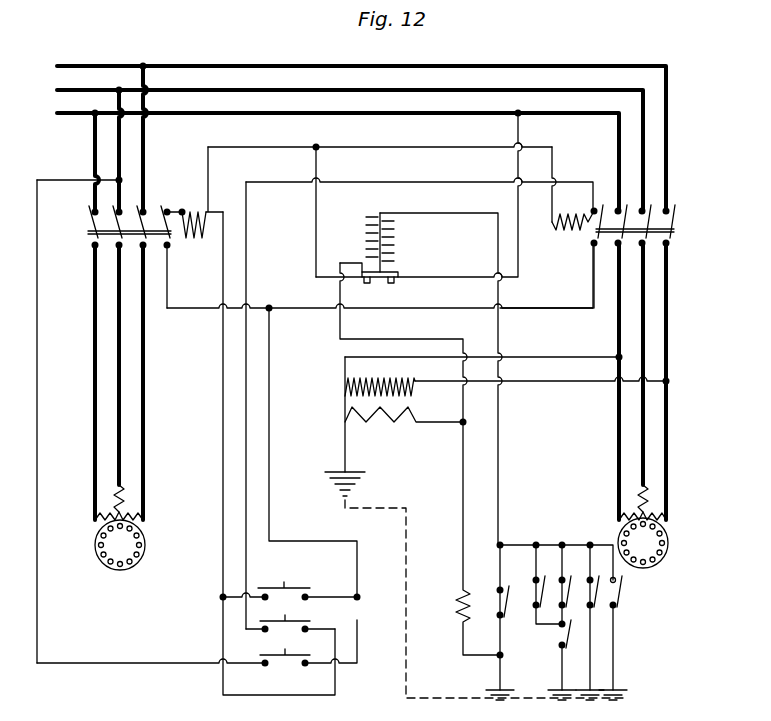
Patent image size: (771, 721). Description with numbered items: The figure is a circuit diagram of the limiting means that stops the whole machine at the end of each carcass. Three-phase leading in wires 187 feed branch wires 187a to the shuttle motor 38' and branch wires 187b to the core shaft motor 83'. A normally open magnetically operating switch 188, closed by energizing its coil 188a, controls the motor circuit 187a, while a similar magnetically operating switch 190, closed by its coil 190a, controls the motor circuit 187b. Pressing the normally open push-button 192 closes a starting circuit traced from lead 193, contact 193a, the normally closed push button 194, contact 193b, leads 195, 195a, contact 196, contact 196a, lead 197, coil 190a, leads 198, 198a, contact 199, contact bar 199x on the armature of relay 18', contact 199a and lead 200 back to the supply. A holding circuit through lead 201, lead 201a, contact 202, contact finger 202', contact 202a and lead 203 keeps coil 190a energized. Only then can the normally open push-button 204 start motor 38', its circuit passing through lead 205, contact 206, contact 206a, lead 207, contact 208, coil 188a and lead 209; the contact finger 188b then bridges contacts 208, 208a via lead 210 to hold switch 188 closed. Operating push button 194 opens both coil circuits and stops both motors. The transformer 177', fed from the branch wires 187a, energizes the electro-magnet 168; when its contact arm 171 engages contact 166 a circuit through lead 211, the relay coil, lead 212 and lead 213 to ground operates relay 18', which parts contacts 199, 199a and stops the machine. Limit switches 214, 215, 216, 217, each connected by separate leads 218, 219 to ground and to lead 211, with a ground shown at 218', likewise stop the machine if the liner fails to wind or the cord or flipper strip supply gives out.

The leading in wires 187 is at (313, 91).
The branch wires 187a is at (646, 348).
The branch wires 187b is at (122, 418).
The magnetically operating switch 188 is at (673, 219).
The coil 188a is at (588, 232).
The contact finger 188b is at (593, 246).
The magnetically operating switch 190 is at (86, 229).
The coil 190a is at (198, 236).
The push-button 192 is at (284, 582).
The lead 193 is at (88, 661).
The contact 193a is at (263, 666).
The contact 193b is at (306, 659).
The push button 194 is at (285, 666).
The lead 195 is at (358, 620).
The lead 195a is at (355, 594).
The contact 196 is at (308, 600).
The contact 196a is at (264, 600).
The lead 197 is at (221, 521).
The lead 198 is at (276, 147).
The lead 198a is at (315, 233).
The contact 199 is at (373, 279).
The contact 199a is at (398, 281).
The contact bar 199x is at (384, 280).
The lead 200 is at (468, 270).
The lead 201 is at (270, 517).
The lead 201a is at (195, 311).
The contact 202 is at (181, 276).
The contact 202a is at (165, 213).
The contact finger 202' is at (105, 416).
The lead 203 is at (182, 213).
The push-button 204 is at (286, 613).
The lead 205 is at (251, 696).
The contact 206 is at (304, 632).
The contact 206a is at (264, 631).
The lead 207 is at (247, 300).
The contact 208 is at (591, 210).
The contact 208a is at (592, 262).
The lead 209 is at (554, 150).
The lead 210 is at (538, 311).
The lead 211 is at (500, 522).
The lead 212 is at (440, 340).
The lead 213 is at (344, 461).
The limit switch 214 is at (538, 583).
The limit switch 215 is at (556, 583).
The limit switch 216 is at (587, 621).
The limit switch 217 is at (620, 598).
The lead 218 is at (587, 660).
The ground connection 218' is at (539, 674).
The lead 219 is at (613, 560).
The contact 166 is at (497, 588).
The electro-magnet 168 is at (457, 600).
The contact arm 171 is at (505, 603).
The transformer 177' is at (492, 413).
The relay 18' is at (363, 242).
The motor 83' is at (120, 558).
The motor 38' is at (659, 543).